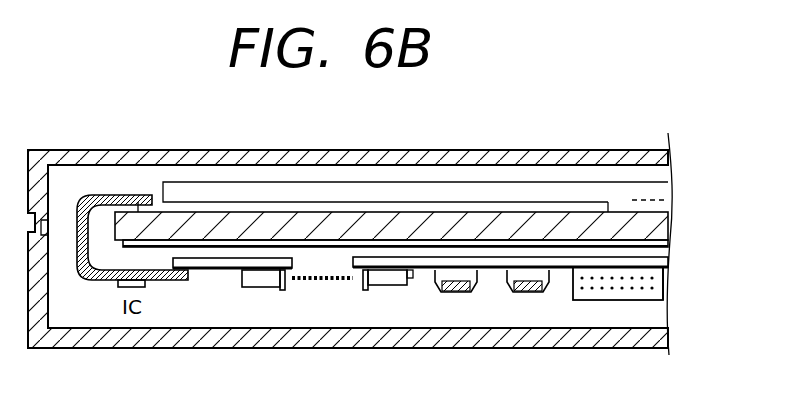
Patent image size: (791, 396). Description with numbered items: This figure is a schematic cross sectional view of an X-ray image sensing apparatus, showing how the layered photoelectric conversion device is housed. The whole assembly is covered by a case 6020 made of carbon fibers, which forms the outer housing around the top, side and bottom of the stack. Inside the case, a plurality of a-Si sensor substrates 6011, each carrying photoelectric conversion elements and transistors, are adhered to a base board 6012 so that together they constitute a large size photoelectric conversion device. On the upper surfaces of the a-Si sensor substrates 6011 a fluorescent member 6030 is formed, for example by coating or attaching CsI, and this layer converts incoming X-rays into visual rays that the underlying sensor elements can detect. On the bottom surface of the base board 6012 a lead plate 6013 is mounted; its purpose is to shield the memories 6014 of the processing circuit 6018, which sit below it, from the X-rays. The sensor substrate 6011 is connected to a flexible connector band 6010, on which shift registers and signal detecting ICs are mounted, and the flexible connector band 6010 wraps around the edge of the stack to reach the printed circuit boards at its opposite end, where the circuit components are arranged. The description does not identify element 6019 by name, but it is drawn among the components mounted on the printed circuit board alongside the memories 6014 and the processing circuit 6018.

The case 6020 is at (122, 152).
The fluorescent member 6030 is at (663, 190).
The a-Si sensor substrate 6011 is at (297, 208).
The base board 6012 is at (666, 222).
The lead plate 6013 is at (666, 247).
The flexible connector band 6010 is at (99, 283).
The electronic component 6019 is at (390, 282).
The processing circuit 6018 is at (664, 264).
The memory 6014 is at (522, 292).